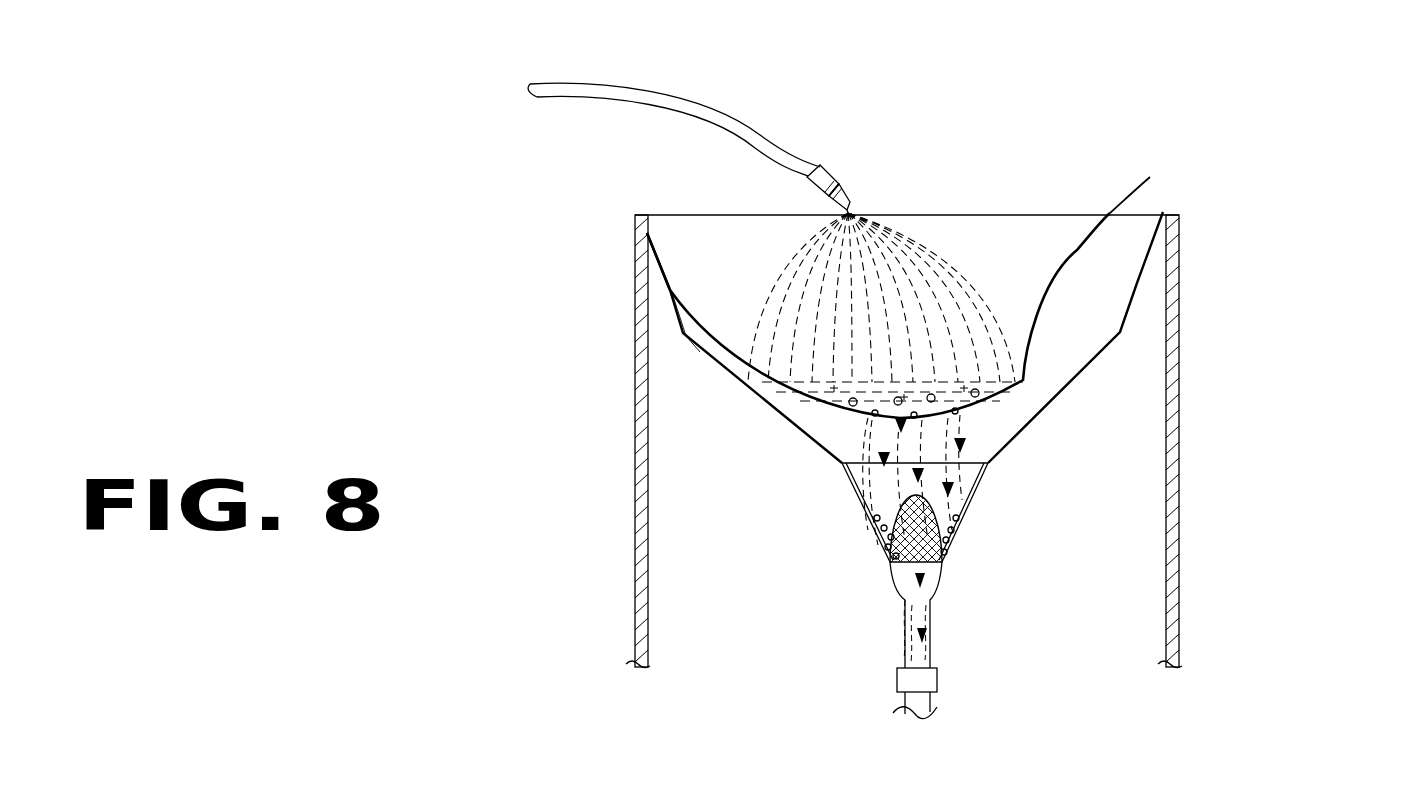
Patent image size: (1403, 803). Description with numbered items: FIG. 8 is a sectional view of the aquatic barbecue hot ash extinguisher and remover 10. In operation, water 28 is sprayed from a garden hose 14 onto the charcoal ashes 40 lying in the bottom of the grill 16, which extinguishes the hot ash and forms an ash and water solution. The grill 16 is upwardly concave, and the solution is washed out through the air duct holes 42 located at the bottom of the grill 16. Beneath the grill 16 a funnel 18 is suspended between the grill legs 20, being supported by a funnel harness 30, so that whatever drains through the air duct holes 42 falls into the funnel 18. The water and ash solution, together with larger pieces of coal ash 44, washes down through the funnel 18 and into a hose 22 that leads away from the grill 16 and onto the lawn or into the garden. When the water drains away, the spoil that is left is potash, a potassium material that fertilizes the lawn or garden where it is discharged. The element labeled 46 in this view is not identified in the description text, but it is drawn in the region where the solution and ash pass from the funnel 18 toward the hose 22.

The aquatic barbecue hot ash extinguisher and remover 10 is at (1232, 230).
The garden hose 14 is at (715, 128).
The grill 16 is at (677, 283).
The funnel 18 is at (960, 530).
The grill legs 20 is at (637, 613).
The hose 22 is at (893, 713).
The water 28 is at (1004, 335).
The funnel harness 30 is at (1120, 334).
The charcoal ashes 40 is at (1146, 173).
The air duct holes 42 is at (849, 402).
The larger pieces of coal ash 44 is at (942, 518).
The beads 46 is at (867, 515).